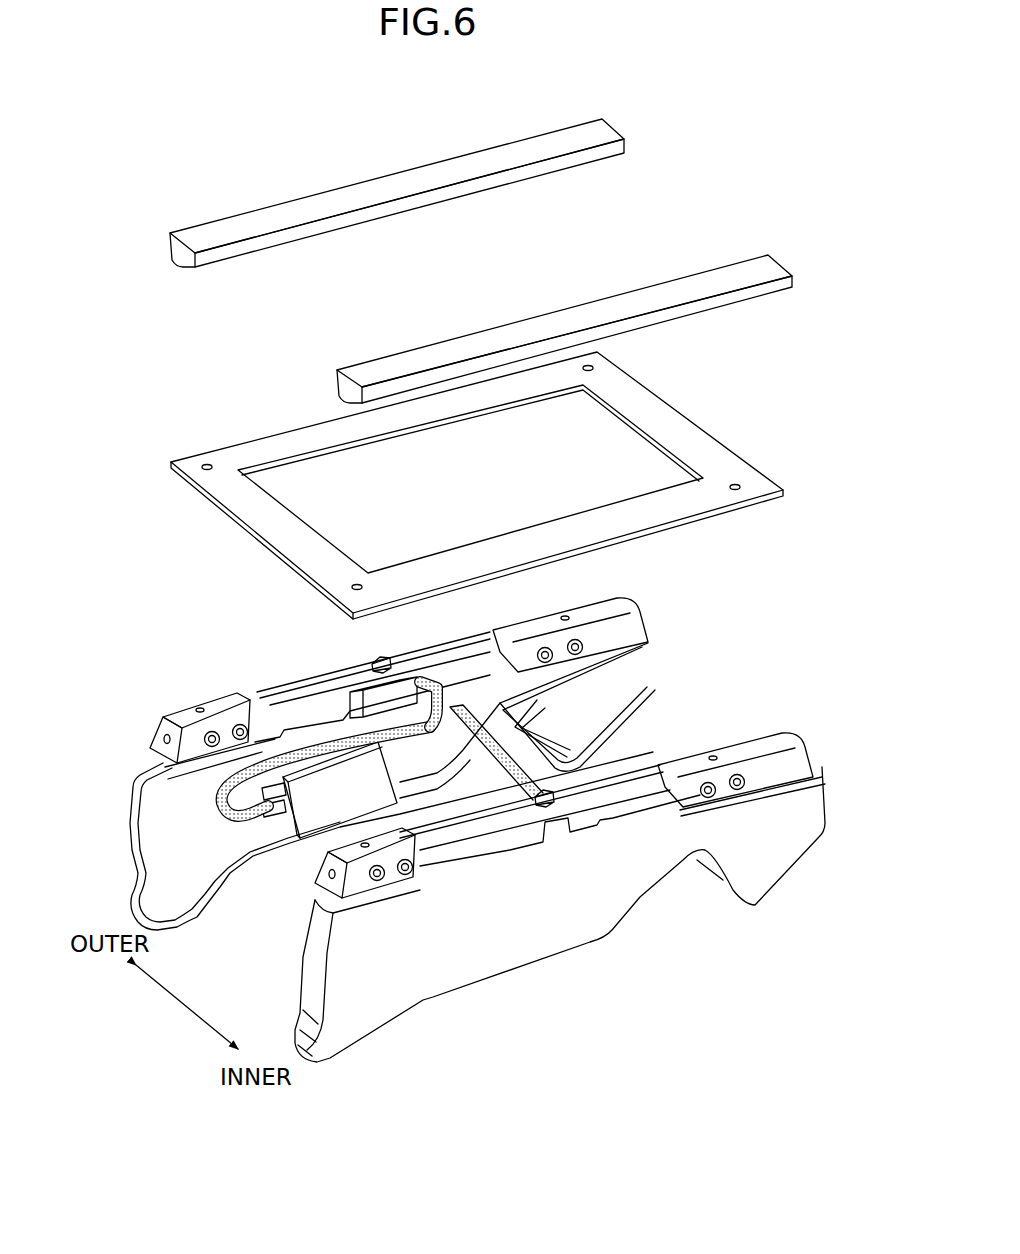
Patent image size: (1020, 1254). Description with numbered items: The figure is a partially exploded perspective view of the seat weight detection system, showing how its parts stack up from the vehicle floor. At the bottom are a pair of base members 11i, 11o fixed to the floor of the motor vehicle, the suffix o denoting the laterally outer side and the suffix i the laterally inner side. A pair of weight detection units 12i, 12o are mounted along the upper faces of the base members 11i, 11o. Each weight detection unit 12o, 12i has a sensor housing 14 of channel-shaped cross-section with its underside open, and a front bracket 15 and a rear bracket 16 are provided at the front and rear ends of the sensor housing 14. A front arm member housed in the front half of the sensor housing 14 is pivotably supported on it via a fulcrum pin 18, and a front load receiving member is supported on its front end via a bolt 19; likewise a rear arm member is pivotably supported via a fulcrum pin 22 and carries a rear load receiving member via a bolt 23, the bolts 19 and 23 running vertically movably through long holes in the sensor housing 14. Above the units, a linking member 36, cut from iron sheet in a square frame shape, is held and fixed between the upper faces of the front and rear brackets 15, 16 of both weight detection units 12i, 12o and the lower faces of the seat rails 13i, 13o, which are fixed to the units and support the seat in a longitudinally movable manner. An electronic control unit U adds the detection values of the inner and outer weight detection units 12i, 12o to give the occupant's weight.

The seat rail 13o is at (525, 147).
The seat rail 13i is at (655, 295).
The linking member 36 is at (675, 425).
The weight detection unit 12o is at (572, 598).
The weight detection unit 12i is at (794, 731).
The sensor housing 14 is at (345, 660).
The rear bracket 16 is at (632, 632).
The front bracket 15 is at (163, 723).
The bolt 19 is at (213, 730).
The fulcrum pin 18 is at (242, 724).
The fulcrum pin 22 is at (546, 663).
The bolt 23 is at (582, 648).
The electronic control unit U is at (375, 783).
The base member 11o is at (167, 880).
The base member 11i is at (333, 968).